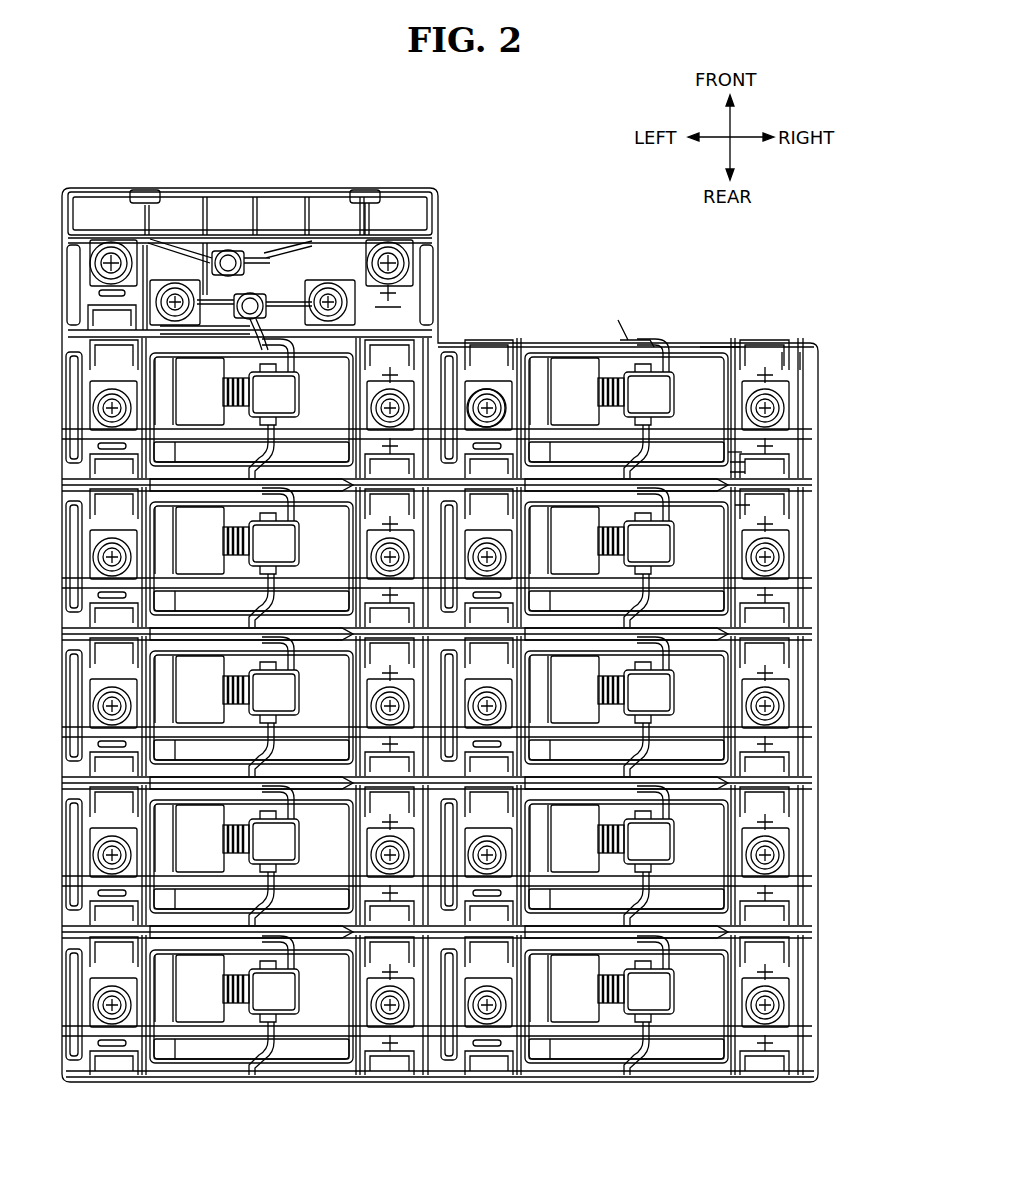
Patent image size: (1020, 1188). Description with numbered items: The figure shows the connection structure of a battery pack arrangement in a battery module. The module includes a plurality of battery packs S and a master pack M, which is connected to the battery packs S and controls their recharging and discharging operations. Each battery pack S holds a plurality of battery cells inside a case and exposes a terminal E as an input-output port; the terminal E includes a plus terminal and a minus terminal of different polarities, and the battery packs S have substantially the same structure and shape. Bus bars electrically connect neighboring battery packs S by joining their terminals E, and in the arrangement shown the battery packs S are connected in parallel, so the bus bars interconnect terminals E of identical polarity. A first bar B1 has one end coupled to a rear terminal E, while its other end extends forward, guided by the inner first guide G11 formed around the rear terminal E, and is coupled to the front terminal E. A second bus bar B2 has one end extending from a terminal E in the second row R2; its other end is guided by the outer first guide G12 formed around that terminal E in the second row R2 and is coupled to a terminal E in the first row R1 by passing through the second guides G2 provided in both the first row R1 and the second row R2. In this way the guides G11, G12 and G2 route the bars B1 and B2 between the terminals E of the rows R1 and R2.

The master pack M is at (368, 188).
The battery pack S is at (578, 328).
The terminal E is at (486, 398).
The second bus bar B2 is at (655, 348).
The first bar B1 is at (732, 455).
The second guide G2 is at (716, 352).
The outer first guide G12 is at (800, 366).
The inner first guide G11 is at (740, 505).
The first row R1 is at (278, 1084).
The second row R2 is at (652, 1084).